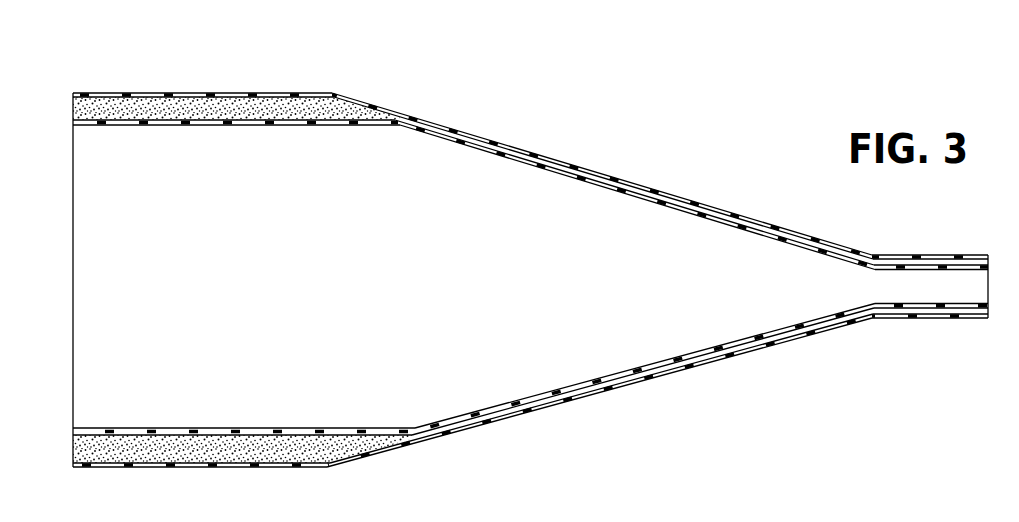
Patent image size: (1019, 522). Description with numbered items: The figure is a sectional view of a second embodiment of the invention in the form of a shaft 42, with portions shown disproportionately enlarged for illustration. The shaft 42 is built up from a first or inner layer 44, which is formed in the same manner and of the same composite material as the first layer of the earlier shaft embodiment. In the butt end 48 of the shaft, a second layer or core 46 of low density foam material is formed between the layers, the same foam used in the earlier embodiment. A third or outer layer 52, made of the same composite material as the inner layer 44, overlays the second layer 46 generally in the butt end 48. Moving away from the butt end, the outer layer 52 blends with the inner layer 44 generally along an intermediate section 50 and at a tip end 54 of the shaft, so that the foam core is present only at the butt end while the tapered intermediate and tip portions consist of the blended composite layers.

The shaft 42 is at (530, 248).
The first or inner layer 44 is at (647, 193).
The second layer or core 46 is at (315, 112).
The butt end 48 is at (265, 92).
The intermediate section 50 is at (601, 280).
The third or outer layer 52 is at (537, 157).
The tip end 54 is at (907, 254).